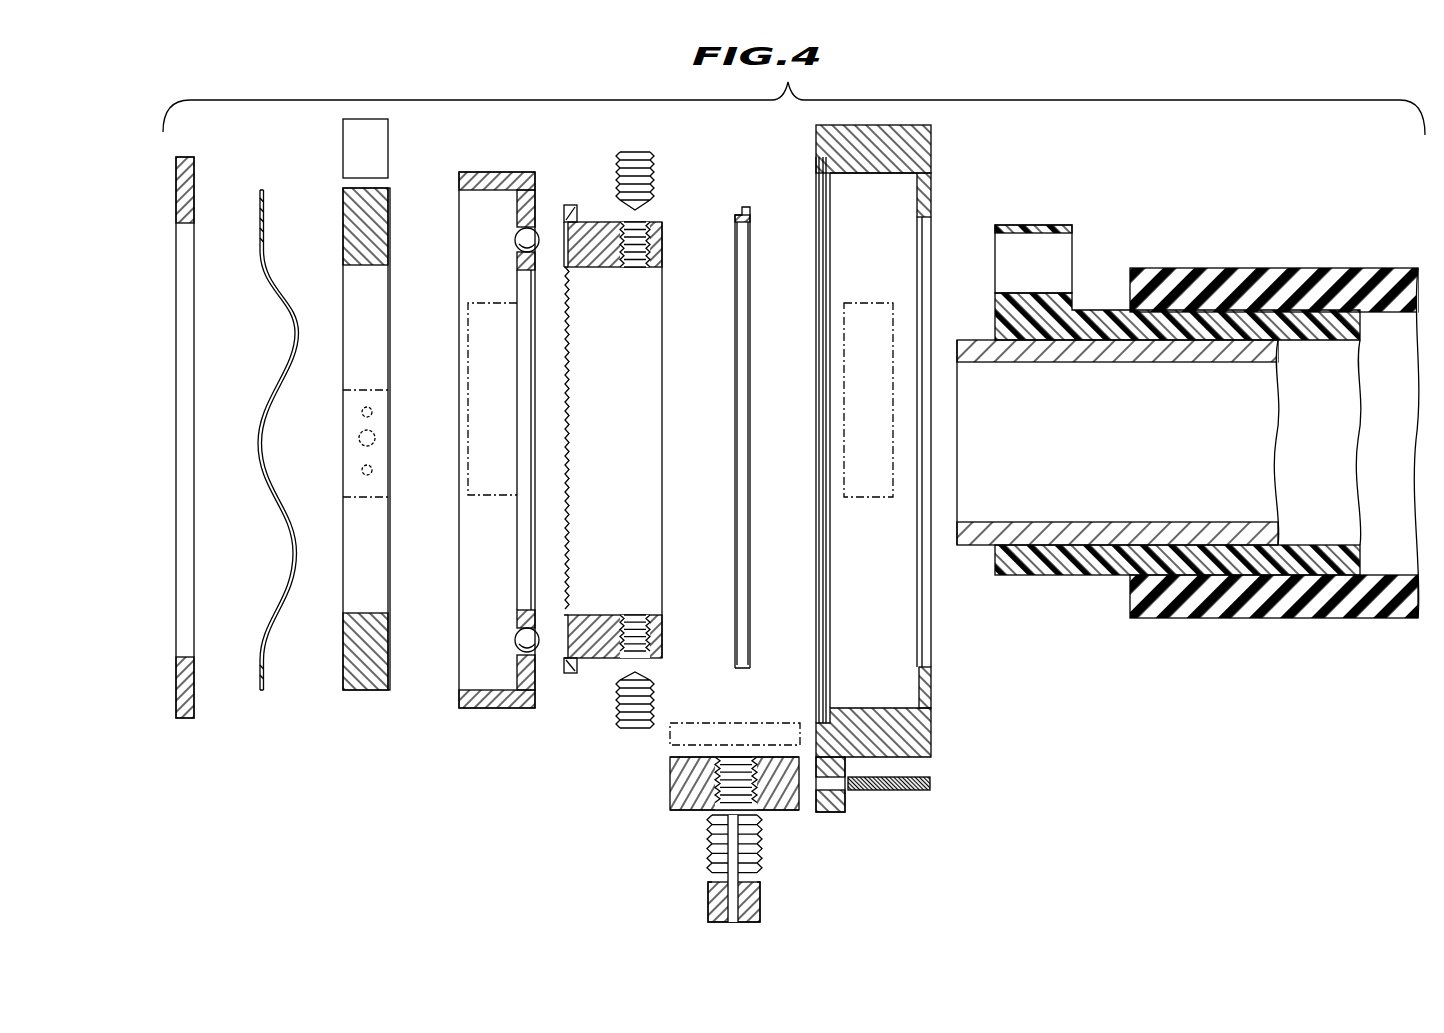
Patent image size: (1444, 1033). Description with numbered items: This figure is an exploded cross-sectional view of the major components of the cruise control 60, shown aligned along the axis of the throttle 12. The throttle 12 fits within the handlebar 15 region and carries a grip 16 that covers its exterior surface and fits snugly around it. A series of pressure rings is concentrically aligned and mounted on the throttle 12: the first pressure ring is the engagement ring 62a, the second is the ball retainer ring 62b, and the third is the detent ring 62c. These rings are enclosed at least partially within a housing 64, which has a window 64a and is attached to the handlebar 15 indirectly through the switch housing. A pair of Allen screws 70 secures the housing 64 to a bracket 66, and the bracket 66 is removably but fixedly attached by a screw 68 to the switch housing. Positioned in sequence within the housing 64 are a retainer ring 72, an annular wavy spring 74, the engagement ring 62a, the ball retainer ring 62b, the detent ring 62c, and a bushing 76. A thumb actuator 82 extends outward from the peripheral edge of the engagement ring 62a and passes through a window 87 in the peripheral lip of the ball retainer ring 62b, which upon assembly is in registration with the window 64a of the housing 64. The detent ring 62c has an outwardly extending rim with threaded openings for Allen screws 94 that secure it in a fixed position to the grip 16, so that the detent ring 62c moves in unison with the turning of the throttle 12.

The cruise control 60 is at (385, 760).
The engagement ring 62a is at (358, 690).
The ball retainer ring 62b is at (478, 706).
The detent ring 62c is at (600, 626).
The housing 64 is at (937, 468).
The window 64a is at (880, 318).
The bracket 66 is at (672, 793).
The screw 68 is at (758, 855).
The Allen screws 70 is at (895, 791).
The retainer ring 72 is at (190, 166).
The annular wavy spring 74 is at (262, 192).
The bushing 76 is at (740, 207).
The thumb actuator 82 is at (383, 143).
The window 87 is at (583, 439).
The Allen screws 94 is at (620, 178).
The throttle 12 is at (1075, 567).
The handlebar 15 is at (1168, 358).
The grip 16 is at (1198, 608).